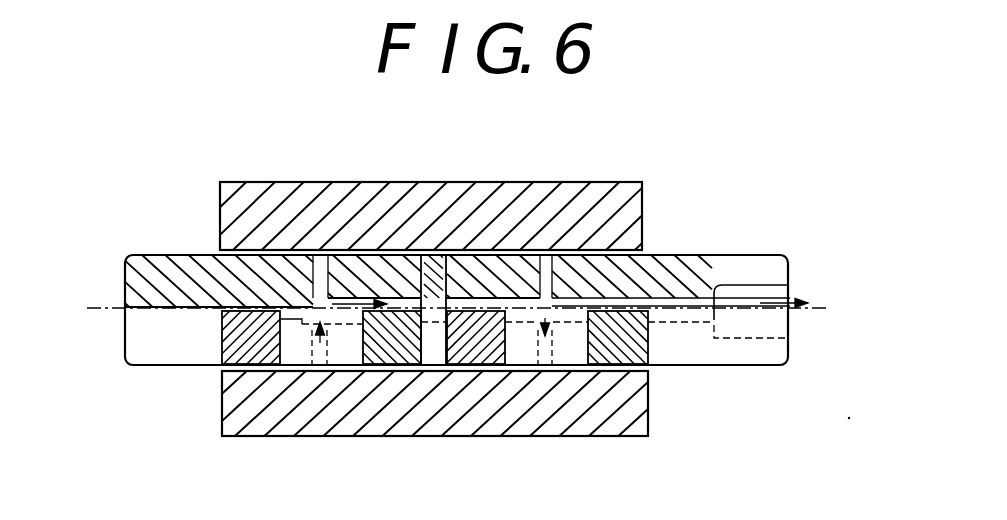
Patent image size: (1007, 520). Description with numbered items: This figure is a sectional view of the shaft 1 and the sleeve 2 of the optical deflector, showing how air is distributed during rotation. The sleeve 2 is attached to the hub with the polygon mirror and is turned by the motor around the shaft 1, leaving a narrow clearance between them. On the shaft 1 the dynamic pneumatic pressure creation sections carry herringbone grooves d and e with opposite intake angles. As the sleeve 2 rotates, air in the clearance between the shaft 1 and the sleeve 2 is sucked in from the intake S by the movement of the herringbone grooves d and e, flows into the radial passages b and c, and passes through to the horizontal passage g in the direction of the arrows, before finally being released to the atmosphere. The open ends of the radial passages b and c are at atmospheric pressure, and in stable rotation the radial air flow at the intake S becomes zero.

The shaft 1 is at (138, 334).
The sleeve 2 is at (440, 195).
The radial passage b is at (319, 298).
The radial passage c is at (545, 298).
The herringbone groove d is at (253, 370).
The herringbone groove e is at (392, 370).
The horizontal passage g is at (695, 302).
The intake S is at (215, 250).